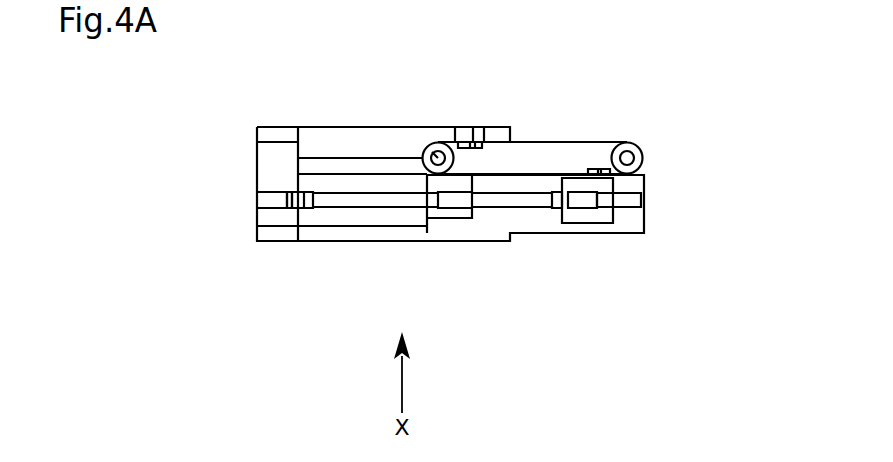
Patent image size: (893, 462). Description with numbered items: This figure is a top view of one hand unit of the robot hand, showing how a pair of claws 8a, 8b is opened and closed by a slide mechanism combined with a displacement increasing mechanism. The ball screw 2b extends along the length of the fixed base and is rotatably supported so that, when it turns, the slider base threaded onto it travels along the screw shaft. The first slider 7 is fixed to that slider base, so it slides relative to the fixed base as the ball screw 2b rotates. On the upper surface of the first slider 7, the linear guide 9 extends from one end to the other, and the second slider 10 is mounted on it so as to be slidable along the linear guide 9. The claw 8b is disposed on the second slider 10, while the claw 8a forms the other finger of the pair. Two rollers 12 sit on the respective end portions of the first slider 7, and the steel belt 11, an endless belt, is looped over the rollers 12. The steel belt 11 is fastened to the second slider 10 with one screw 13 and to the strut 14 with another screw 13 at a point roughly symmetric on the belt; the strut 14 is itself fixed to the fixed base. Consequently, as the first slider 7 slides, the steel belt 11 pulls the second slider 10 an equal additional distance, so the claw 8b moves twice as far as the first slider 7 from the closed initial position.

The ball screw 2b is at (338, 198).
The first slider 7 is at (625, 220).
The claw 8a is at (290, 202).
The claw 8b is at (593, 200).
The linear guide 9 is at (490, 198).
The second slider 10 is at (595, 217).
The steel belt 11 is at (528, 142).
The rollers 12 is at (428, 148).
The screws 13 is at (468, 146).
The strut 14 is at (487, 135).